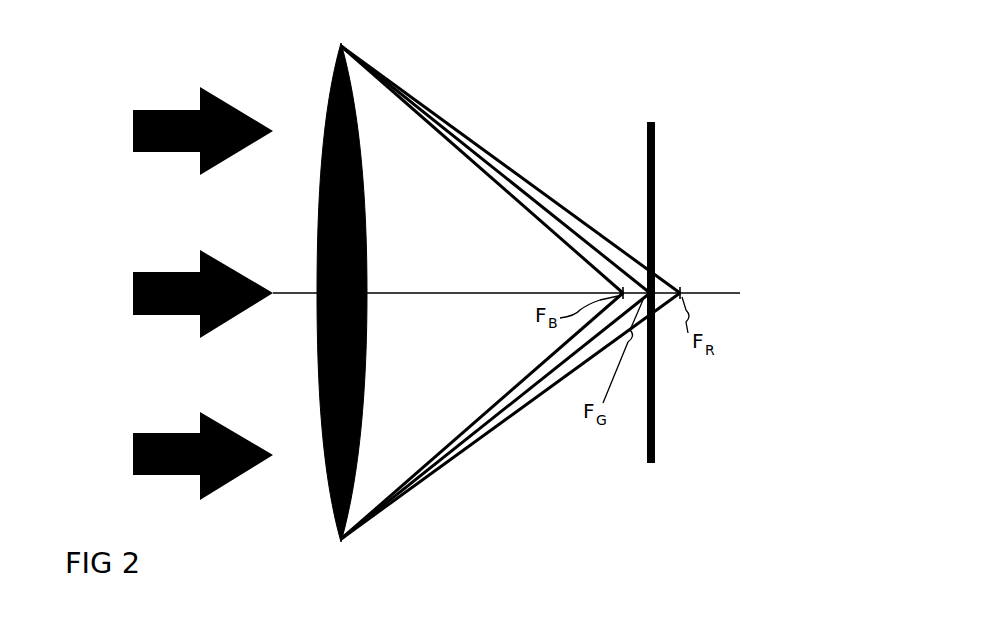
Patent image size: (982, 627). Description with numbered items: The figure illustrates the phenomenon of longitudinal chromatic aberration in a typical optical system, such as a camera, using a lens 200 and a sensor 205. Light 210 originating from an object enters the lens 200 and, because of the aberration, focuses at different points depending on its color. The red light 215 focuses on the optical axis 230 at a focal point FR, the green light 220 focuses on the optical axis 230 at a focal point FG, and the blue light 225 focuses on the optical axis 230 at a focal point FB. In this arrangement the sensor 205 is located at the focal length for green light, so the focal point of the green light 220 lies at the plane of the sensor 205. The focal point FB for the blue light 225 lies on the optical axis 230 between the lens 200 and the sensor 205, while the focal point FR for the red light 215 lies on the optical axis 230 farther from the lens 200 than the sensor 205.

The lens 200 is at (341, 543).
The sensor 205 is at (652, 467).
The light 210 is at (152, 108).
The red light 215 is at (488, 148).
The green light 220 is at (570, 227).
The blue light 225 is at (507, 197).
The optical axis 230 is at (732, 290).